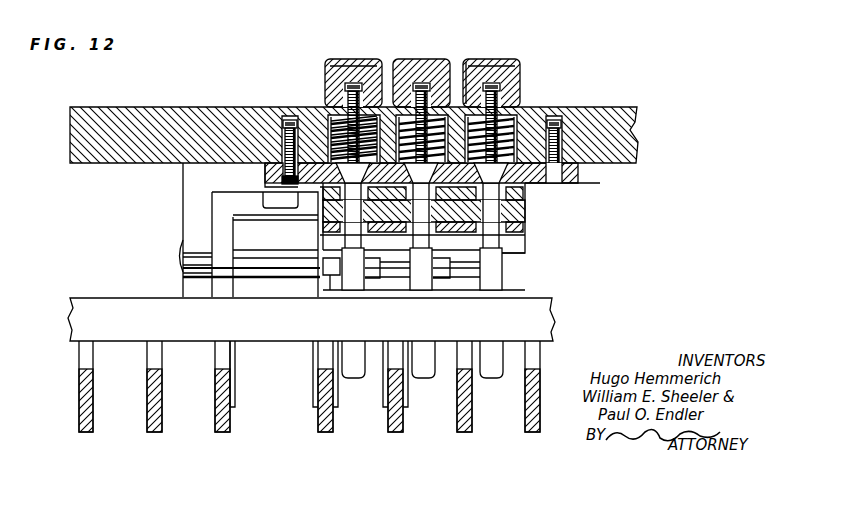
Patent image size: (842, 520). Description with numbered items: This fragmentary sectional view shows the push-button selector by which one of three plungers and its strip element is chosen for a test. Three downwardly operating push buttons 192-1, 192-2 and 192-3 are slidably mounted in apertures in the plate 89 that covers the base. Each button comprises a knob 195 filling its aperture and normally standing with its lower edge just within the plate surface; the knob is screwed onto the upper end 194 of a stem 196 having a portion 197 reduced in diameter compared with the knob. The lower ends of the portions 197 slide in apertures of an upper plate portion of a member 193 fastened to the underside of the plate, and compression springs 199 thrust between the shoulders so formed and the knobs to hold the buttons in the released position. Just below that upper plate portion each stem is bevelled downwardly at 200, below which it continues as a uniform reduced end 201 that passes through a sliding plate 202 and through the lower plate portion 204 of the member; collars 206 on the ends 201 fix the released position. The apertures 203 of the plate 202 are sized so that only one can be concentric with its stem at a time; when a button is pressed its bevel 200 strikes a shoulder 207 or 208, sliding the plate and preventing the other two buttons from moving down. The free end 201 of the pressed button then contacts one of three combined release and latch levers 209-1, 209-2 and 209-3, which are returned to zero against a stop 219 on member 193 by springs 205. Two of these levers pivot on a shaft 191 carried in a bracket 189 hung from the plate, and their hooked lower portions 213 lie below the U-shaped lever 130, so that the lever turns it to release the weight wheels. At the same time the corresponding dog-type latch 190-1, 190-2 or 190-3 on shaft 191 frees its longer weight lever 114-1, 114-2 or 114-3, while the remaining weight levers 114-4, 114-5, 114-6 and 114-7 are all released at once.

The plate 89 is at (637, 130).
The push button 192-1 is at (503, 48).
The push button 192-2 is at (430, 60).
The push button 192-3 is at (354, 46).
The knob 195 is at (376, 64).
The upper end of stem 194 is at (522, 86).
The stem 196 is at (330, 124).
The compression spring 199 is at (341, 128).
The reduced portion of stem 197 is at (556, 112).
The aperture 203 is at (522, 190).
The member 193 is at (600, 180).
The bevel 200 is at (525, 206).
The lower plate portion 204 is at (525, 216).
The washer or collar 206 is at (525, 226).
The lower end of stem 201 is at (525, 240).
The stop 219 is at (502, 256).
The plate 202 is at (319, 194).
The bracket 189 is at (183, 183).
The shaft 191 is at (179, 256).
The spring 205 is at (324, 262).
The shoulder 208 is at (424, 264).
The shoulder 207 is at (422, 258).
The combined release and latch lever 209-1 is at (492, 292).
The combined release and latch lever 209-2 is at (423, 292).
The combined release and latch lever 209-3 is at (354, 292).
The U-shaped lever 130 is at (556, 325).
The weight lever 114-1 is at (216, 420).
The weight lever 114-2 is at (320, 413).
The weight lever 114-3 is at (390, 420).
The weight lever 114-4 is at (458, 420).
The weight lever 114-5 is at (148, 418).
The weight lever 114-6 is at (526, 420).
The weight lever 114-7 is at (80, 392).
The latch 190-1 is at (235, 373).
The latch 190-2 is at (313, 383).
The latch 190-3 is at (393, 396).
The lower portion of bifurcated end 213 is at (481, 366).